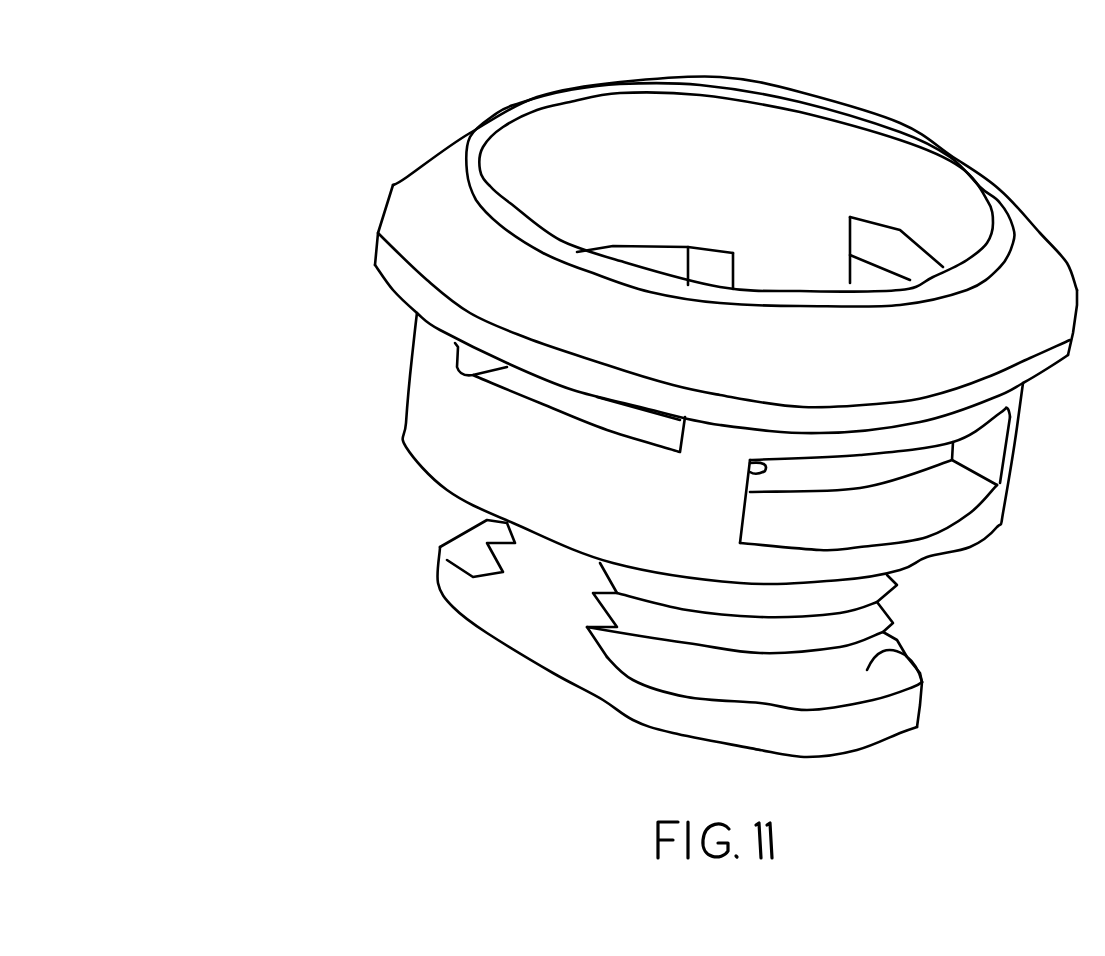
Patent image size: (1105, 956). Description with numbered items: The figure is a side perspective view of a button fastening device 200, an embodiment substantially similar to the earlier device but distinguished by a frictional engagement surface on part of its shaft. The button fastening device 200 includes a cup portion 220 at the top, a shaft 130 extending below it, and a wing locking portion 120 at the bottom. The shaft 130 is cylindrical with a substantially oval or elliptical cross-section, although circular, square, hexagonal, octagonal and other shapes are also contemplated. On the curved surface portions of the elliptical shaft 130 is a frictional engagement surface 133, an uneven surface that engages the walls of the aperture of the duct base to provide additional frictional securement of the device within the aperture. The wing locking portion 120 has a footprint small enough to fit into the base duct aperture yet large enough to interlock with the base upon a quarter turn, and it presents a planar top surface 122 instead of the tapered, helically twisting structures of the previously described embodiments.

The button fastening device 200 is at (970, 135).
The cup portion 220 is at (385, 103).
The shaft 130 is at (572, 580).
The frictional engagement surface 133 is at (887, 600).
The planar top surface 122 is at (867, 670).
The wing locking portion 120 is at (880, 727).